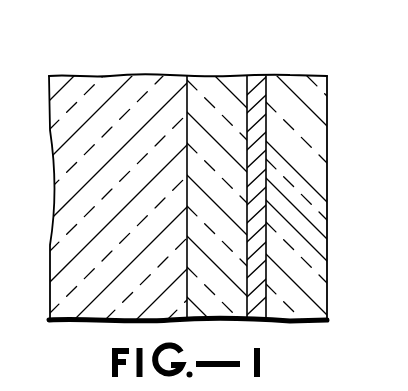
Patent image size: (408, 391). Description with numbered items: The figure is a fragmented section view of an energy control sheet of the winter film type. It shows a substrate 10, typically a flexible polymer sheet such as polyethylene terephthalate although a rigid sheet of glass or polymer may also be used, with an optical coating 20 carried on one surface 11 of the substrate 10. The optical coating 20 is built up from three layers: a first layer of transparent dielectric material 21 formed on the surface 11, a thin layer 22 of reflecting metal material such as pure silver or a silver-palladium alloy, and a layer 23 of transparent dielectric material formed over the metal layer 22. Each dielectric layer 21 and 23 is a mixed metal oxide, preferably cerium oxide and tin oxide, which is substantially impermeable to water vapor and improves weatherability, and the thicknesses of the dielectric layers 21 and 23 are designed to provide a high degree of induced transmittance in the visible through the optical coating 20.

The substrate 10 is at (115, 80).
The surface of the substrate 11 is at (187, 99).
The optical coating 20 is at (247, 62).
The first layer of transparent dielectric material 21 is at (215, 87).
The thin layer of reflecting metal material 22 is at (255, 80).
The layer of transparent dielectric material 23 is at (305, 80).